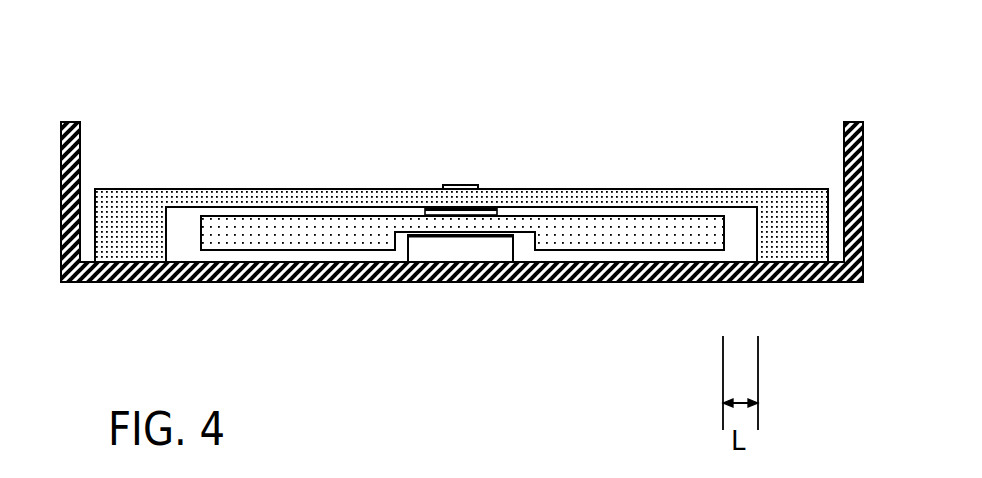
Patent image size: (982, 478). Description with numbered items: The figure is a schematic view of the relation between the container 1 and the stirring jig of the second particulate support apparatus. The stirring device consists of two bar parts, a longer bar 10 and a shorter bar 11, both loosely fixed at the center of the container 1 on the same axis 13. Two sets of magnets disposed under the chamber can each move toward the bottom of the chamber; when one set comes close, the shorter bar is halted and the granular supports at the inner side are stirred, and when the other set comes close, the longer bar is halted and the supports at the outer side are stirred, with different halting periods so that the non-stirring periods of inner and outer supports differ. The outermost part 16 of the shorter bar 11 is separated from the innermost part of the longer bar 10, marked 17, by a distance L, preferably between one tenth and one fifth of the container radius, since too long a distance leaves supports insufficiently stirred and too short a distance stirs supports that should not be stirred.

The container 1 is at (831, 114).
The longer bar 10 is at (332, 265).
The shorter bar 11 is at (525, 179).
The axis 13 is at (455, 171).
The outermost part of the shorter bar 16 is at (716, 265).
The inner wall of resin layer 17 is at (757, 276).